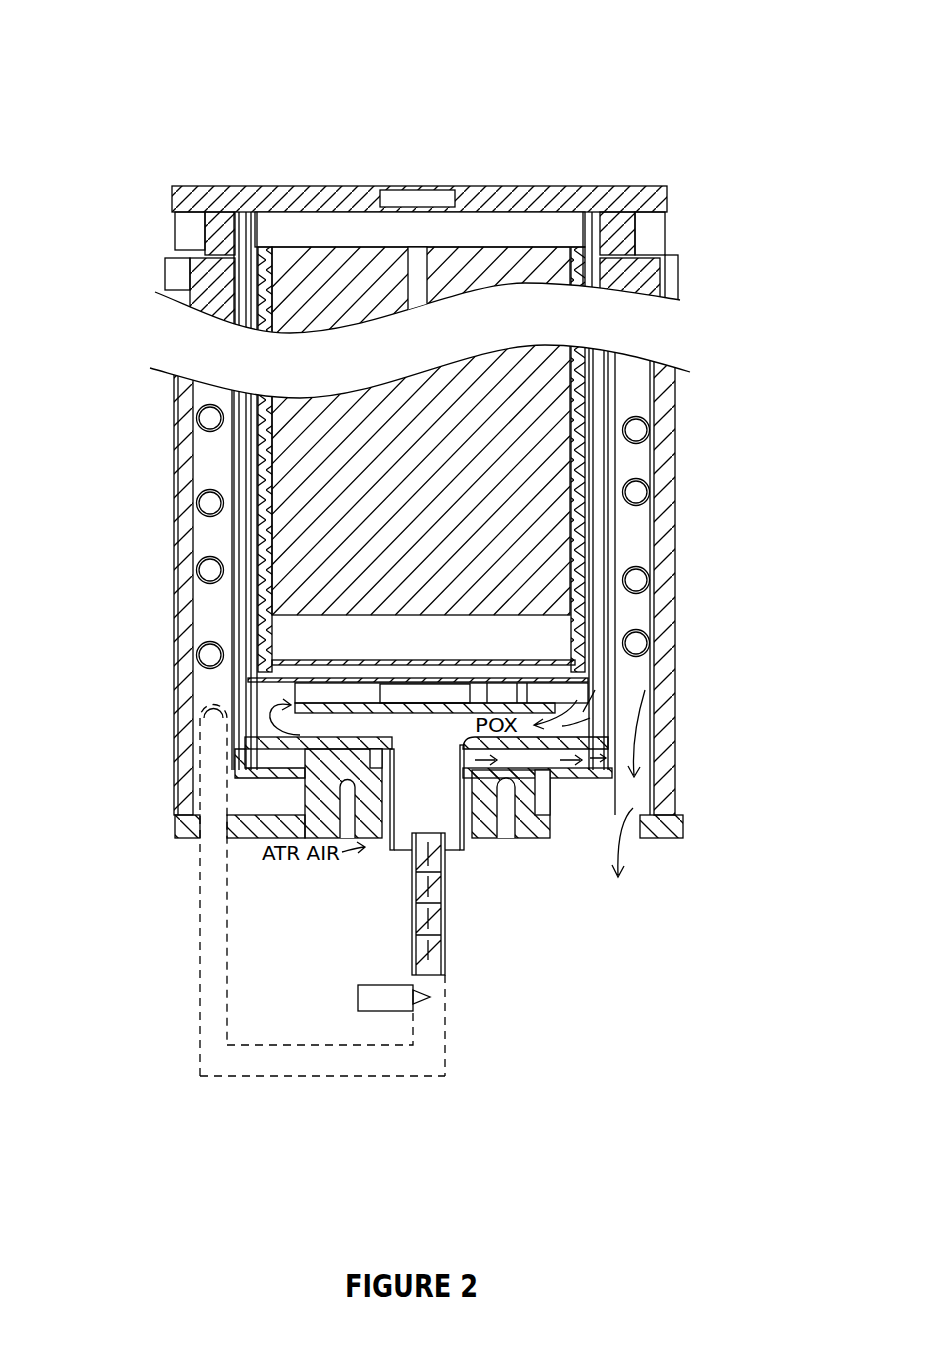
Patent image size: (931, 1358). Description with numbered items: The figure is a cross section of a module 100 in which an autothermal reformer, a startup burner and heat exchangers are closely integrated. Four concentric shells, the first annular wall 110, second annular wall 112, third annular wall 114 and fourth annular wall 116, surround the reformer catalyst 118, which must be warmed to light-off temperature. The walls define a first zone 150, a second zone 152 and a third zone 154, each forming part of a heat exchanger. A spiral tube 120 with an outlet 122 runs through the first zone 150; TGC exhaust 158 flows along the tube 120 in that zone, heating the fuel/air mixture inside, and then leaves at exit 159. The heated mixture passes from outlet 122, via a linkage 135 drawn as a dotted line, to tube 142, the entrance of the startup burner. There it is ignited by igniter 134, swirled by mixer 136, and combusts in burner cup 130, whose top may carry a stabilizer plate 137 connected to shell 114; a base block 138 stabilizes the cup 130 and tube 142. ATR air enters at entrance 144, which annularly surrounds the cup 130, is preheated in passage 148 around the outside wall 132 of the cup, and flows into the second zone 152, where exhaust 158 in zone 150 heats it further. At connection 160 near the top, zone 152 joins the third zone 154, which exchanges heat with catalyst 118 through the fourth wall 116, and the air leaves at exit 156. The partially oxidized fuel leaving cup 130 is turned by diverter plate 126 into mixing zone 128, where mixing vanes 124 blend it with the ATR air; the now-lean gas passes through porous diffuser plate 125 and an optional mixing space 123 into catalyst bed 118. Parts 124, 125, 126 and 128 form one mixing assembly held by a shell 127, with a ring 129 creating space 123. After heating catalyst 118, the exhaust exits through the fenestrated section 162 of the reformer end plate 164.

The module 100 is at (318, 76).
The first annular wall 110 is at (235, 457).
The second annular wall 112 is at (237, 455).
The third annular wall 114 is at (240, 518).
The fourth annular wall 116 is at (270, 530).
The reformer catalyst 118 is at (285, 585).
The spiral tube 120 is at (217, 657).
The outlet 122 is at (213, 750).
The mixing space 123 is at (383, 640).
The mixing vanes 124 is at (325, 690).
The porous diffuser plate 125 is at (432, 635).
The diverter plate 126 is at (433, 713).
The shell 127 is at (583, 675).
The mixing zone 128 is at (457, 693).
The ring 129 is at (568, 628).
The burner cup 130 is at (410, 838).
The outside wall 132 is at (458, 780).
The igniter 134 is at (380, 993).
The linkage 135 is at (223, 1058).
The mixer 136 is at (447, 896).
The stabilizer plate 137 is at (553, 748).
The base block 138 is at (248, 845).
The tube 142 is at (445, 945).
The entrance 144 is at (385, 845).
The passage 148 is at (602, 750).
The first zone 150 is at (643, 552).
The second zone 152 is at (607, 537).
The third zone 154 is at (597, 478).
The exit 156 is at (590, 718).
The TGC exhaust 158 is at (628, 403).
The exit 159 is at (628, 801).
The connection 160 is at (660, 262).
The fenestrated or open section 162 is at (430, 200).
The reformer end plate 164 is at (512, 200).